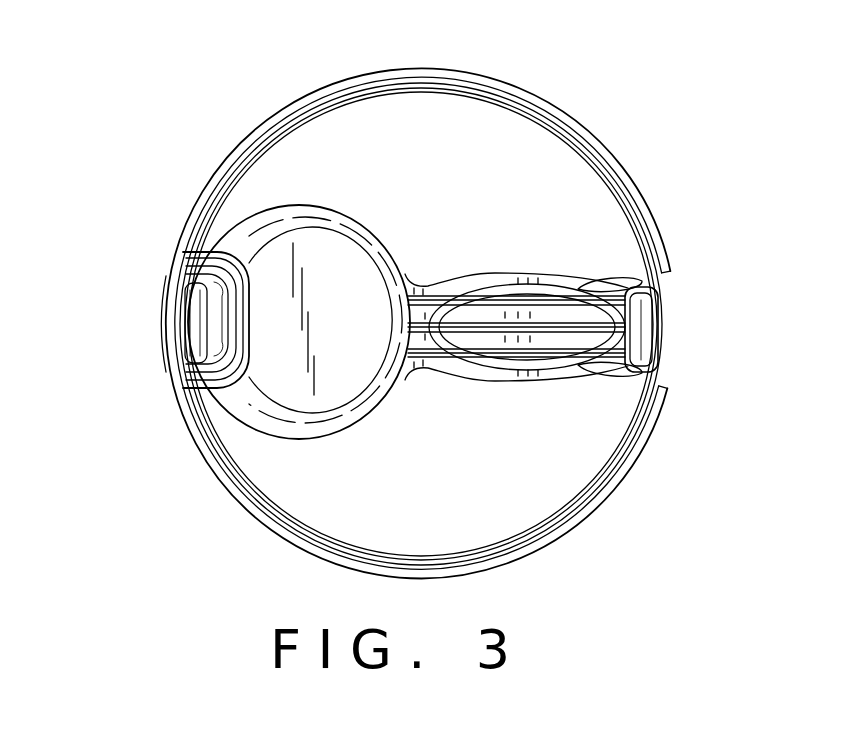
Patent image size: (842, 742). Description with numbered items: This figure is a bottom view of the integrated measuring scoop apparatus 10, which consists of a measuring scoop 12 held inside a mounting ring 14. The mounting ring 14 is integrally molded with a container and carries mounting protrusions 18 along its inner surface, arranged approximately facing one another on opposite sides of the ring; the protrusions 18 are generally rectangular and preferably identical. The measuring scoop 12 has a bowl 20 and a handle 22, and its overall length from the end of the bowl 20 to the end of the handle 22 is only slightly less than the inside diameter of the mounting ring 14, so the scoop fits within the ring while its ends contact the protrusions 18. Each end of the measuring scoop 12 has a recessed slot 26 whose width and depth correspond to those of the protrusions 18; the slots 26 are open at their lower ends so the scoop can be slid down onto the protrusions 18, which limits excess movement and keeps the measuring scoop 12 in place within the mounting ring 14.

The integrated measuring scoop apparatus 10 is at (188, 132).
The measuring scoop 12 is at (460, 379).
The mounting ring 14 is at (320, 100).
The mounting protrusions 18 is at (188, 317).
The bowl 20 is at (267, 436).
The handle 22 is at (548, 342).
The recessed slot 26 is at (195, 279).